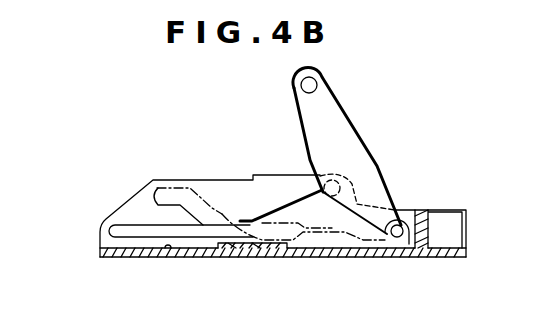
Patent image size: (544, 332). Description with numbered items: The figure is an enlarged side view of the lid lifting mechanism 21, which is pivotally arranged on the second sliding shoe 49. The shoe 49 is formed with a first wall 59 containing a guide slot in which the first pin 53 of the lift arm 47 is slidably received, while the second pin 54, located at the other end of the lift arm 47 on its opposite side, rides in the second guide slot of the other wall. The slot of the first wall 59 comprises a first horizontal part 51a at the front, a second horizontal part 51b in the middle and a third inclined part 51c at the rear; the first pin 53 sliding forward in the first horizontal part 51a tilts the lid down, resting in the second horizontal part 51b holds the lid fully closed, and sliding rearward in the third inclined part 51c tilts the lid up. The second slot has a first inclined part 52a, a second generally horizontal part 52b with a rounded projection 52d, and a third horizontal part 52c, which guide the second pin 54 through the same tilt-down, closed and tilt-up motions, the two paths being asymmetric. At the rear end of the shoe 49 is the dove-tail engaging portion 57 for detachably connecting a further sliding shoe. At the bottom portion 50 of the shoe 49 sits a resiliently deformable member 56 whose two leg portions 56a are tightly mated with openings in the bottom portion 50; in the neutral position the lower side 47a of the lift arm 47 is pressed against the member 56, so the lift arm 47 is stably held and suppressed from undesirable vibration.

The lifting mechanism 21 is at (467, 260).
The lift arm 47 is at (332, 103).
The lower side of the lift arm 47a is at (370, 235).
The second sliding shoe 49 is at (463, 194).
The bottom portion 50 is at (162, 258).
The first horizontal part 51a is at (122, 230).
The second horizontal part 51b is at (242, 240).
The third inclined part 51c is at (318, 236).
The first inclined part 52a is at (160, 186).
The second generally horizontal part 52b is at (303, 245).
The third horizontal part 52c is at (385, 255).
The rounded projection 52d is at (312, 183).
The first pin 53 is at (342, 188).
The second pin 54 is at (398, 226).
The resiliently deformable member 56 is at (243, 258).
The leg portions 56a is at (273, 258).
The engaging portion 57 is at (455, 230).
The first wall 59 is at (106, 233).